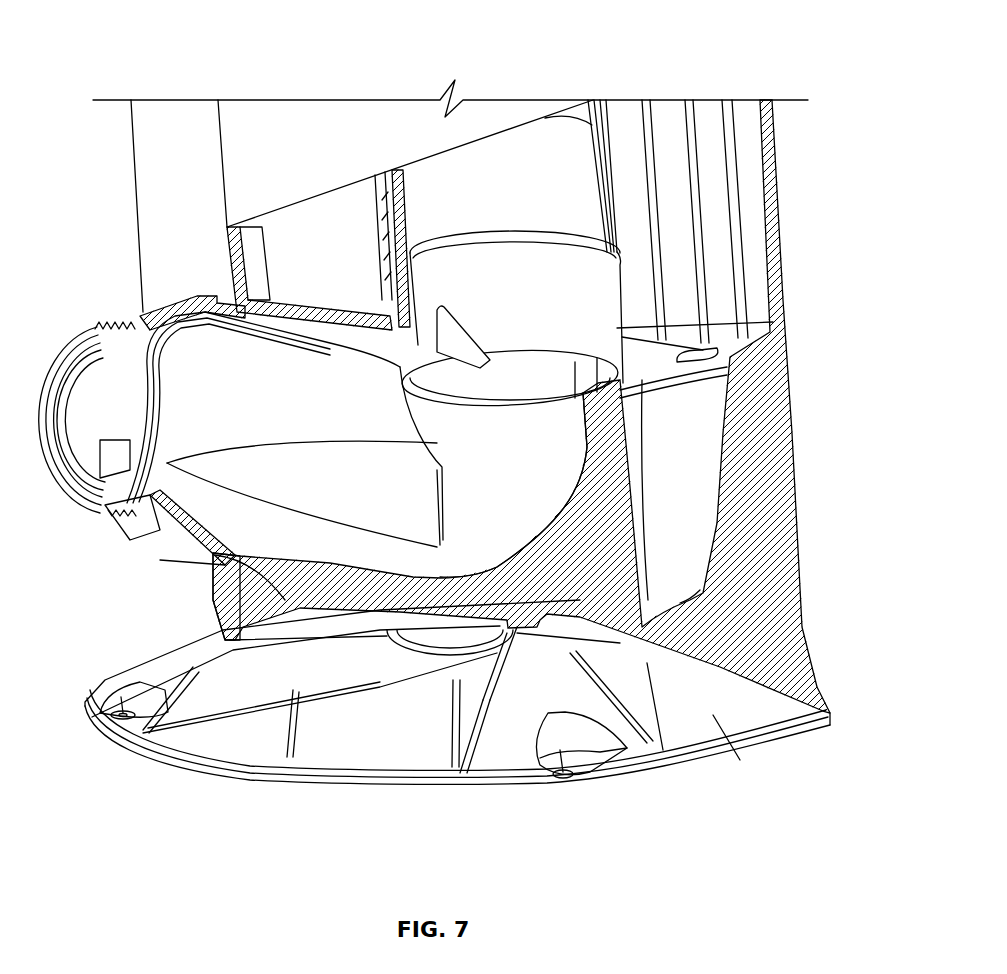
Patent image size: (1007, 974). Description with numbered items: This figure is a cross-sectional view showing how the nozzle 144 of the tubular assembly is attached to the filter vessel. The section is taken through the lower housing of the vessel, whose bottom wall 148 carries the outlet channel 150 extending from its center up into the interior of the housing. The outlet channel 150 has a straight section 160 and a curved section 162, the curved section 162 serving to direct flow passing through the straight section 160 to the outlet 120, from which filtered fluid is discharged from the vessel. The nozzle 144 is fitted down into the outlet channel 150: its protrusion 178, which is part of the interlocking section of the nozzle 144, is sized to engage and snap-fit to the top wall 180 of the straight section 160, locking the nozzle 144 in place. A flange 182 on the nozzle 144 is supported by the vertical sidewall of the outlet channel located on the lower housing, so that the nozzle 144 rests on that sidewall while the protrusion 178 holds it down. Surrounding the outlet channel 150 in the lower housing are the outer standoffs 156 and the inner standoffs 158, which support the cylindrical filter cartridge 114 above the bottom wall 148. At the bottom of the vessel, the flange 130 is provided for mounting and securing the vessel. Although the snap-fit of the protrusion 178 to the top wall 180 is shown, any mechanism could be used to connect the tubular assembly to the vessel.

The cylindrical filter cartridge 114 is at (717, 288).
The outlet 120 is at (113, 327).
The flange 130 is at (230, 712).
The nozzle 144 is at (488, 207).
The bottom wall 148 is at (687, 590).
The outlet channel 150 is at (488, 503).
The outer standoffs 156 is at (772, 452).
The inner standoffs 158 is at (620, 552).
The straight section 160 is at (207, 557).
The curved section 162 is at (572, 598).
The protrusion 178 is at (230, 285).
The top wall 180 is at (388, 325).
The flange 182 is at (623, 262).